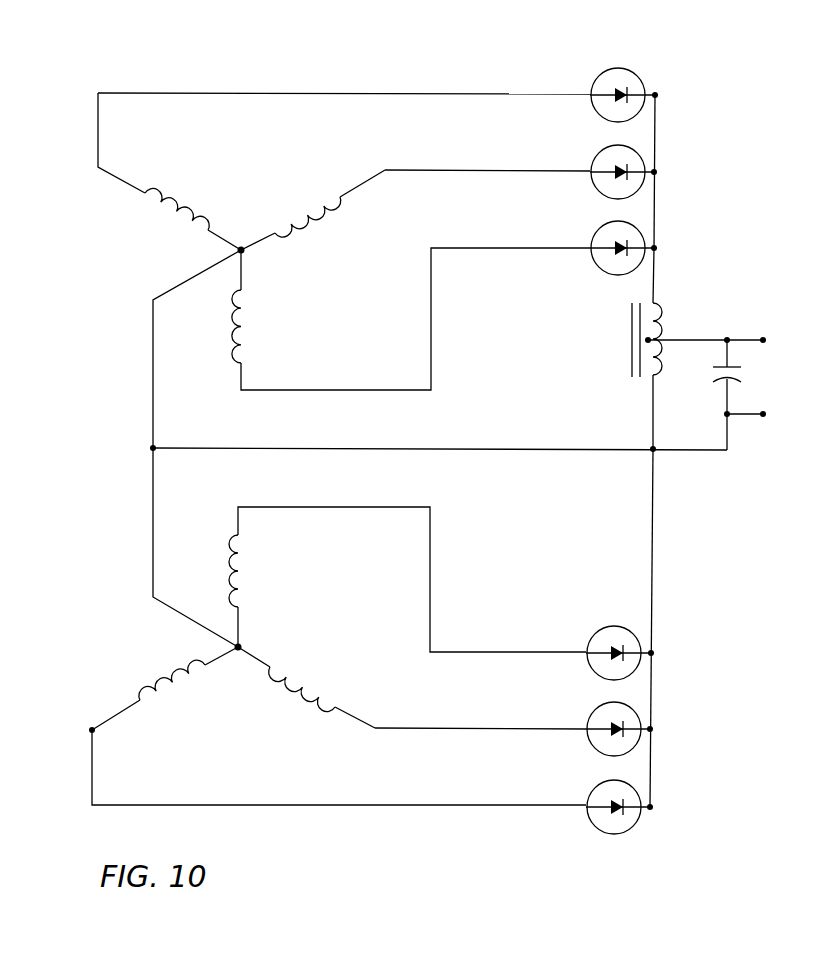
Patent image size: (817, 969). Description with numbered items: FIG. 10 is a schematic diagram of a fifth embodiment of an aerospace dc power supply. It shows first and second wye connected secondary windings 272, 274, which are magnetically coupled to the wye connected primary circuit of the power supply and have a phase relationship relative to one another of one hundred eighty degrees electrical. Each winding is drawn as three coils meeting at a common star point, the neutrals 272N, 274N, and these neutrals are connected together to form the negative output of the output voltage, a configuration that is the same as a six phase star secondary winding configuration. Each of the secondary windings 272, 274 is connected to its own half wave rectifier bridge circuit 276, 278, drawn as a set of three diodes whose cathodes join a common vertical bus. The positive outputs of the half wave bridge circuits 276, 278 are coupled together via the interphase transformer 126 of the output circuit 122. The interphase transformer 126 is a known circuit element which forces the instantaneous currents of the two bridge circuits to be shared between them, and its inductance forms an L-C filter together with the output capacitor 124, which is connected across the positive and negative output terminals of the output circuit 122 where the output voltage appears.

The first wye connected secondary winding 272 is at (256, 211).
The neutral of first secondary winding 272N is at (243, 250).
The second wye connected secondary winding 274 is at (292, 605).
The neutral of second secondary winding 274N is at (238, 650).
The half wave rectifier bridge circuit 276 is at (675, 74).
The half wave rectifier bridge circuit 278 is at (694, 662).
The output circuit 122 is at (678, 349).
The output capacitor 124 is at (720, 378).
The interphase transformer 126 is at (630, 345).